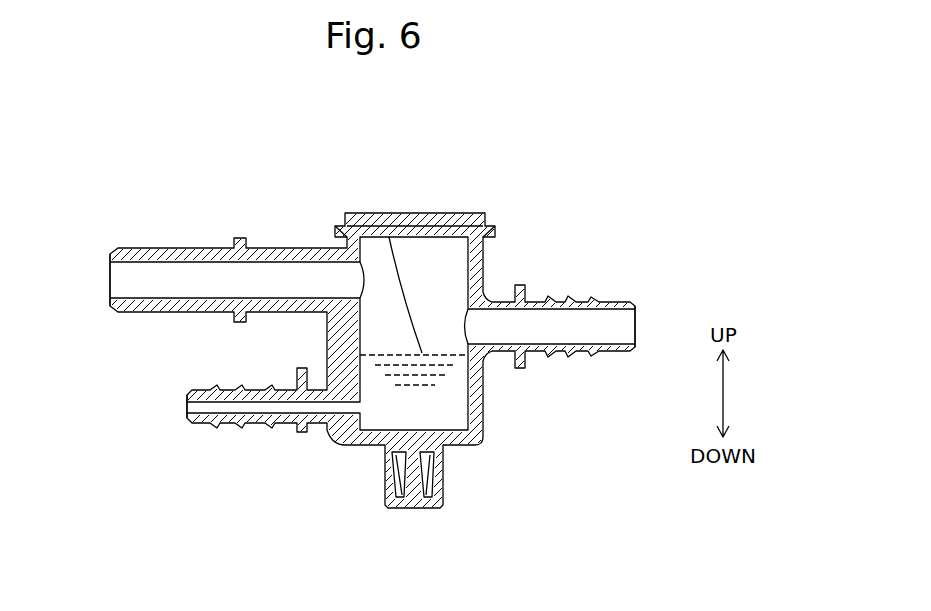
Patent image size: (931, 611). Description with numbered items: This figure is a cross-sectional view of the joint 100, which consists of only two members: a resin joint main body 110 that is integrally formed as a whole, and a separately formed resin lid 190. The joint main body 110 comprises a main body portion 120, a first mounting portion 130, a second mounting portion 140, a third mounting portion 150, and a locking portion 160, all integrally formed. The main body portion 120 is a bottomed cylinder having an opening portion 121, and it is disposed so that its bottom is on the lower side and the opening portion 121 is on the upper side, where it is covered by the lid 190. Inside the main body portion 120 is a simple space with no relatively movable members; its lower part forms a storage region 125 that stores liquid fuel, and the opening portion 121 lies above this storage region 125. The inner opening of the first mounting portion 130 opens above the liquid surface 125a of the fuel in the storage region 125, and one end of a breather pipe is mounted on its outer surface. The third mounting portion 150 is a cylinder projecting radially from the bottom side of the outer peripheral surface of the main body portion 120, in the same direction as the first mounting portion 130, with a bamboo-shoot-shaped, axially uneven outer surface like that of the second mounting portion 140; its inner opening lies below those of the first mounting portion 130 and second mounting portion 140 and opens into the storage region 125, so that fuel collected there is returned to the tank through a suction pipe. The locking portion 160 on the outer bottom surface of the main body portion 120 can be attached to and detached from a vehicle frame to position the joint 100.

The joint 100 is at (372, 325).
The joint main body 110 is at (490, 263).
The main body portion 120 is at (483, 395).
The opening portion 121 is at (352, 212).
The storage region 125 is at (447, 413).
The liquid surface 125a is at (389, 237).
The first mounting portion 130 is at (170, 247).
The second mounting portion 140 is at (616, 300).
The third mounting portion 150 is at (248, 422).
The locking portion 160 is at (412, 508).
The lid 190 is at (470, 213).